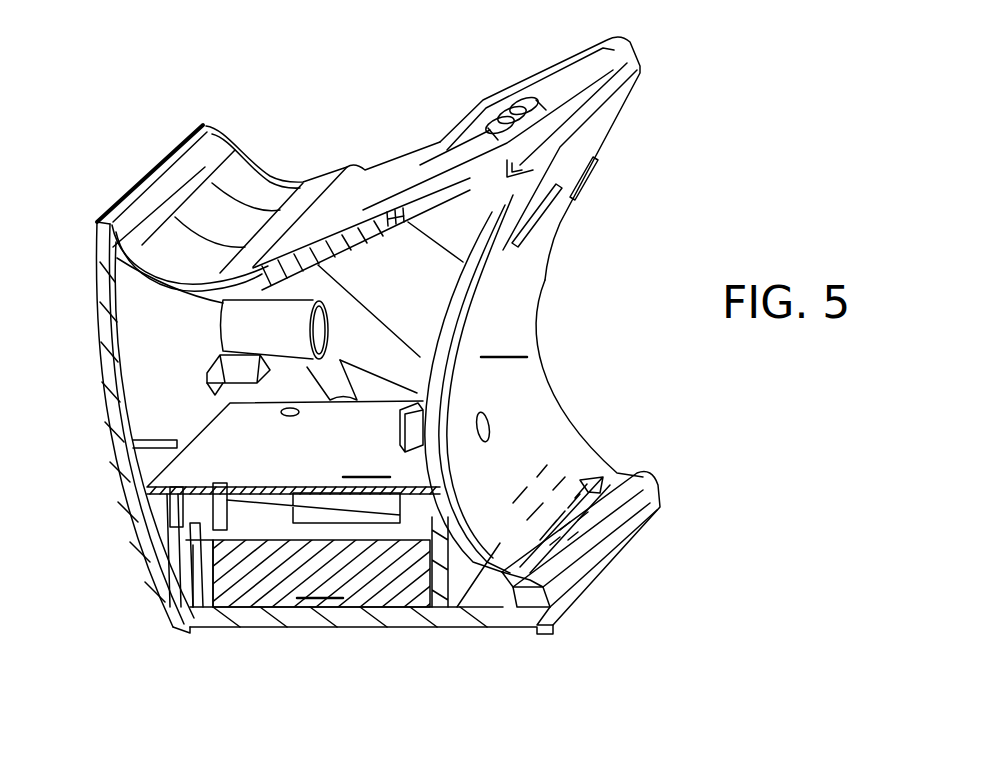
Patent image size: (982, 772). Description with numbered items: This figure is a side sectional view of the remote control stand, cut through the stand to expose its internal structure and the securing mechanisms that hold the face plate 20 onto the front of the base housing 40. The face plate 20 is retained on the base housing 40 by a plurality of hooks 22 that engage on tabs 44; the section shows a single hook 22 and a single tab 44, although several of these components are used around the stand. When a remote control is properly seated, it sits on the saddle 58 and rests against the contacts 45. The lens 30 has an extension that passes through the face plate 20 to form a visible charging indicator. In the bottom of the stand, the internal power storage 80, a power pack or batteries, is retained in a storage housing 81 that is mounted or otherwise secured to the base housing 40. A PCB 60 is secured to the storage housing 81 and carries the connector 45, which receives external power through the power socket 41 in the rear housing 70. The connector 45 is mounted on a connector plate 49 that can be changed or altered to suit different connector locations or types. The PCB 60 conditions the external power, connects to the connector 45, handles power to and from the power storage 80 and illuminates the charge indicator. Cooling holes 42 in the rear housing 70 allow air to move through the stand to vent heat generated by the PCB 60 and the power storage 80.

The face plate 20 is at (147, 560).
The hook 22 is at (213, 383).
The lens 30 is at (170, 520).
The base housing 40 is at (367, 627).
The power socket 41 is at (490, 420).
The cooling holes 42 is at (533, 233).
The tab 44 is at (223, 363).
The connector 45 is at (493, 127).
The connector plate 49 is at (622, 37).
The saddle 58 is at (274, 166).
The PCB 60 is at (293, 447).
The rear housing 70 is at (534, 401).
The internal power storage 80 is at (325, 573).
The storage housing 81 is at (193, 583).